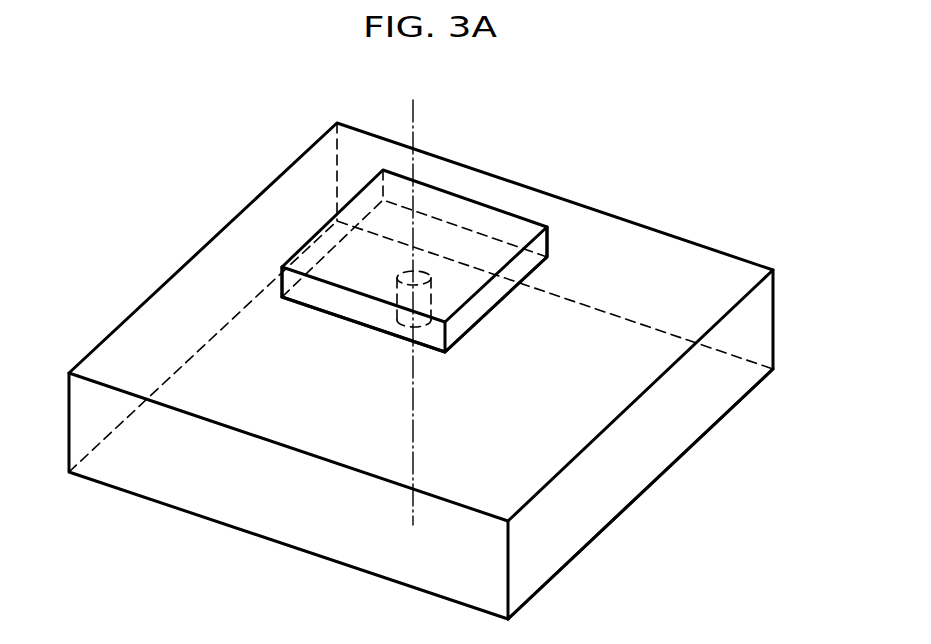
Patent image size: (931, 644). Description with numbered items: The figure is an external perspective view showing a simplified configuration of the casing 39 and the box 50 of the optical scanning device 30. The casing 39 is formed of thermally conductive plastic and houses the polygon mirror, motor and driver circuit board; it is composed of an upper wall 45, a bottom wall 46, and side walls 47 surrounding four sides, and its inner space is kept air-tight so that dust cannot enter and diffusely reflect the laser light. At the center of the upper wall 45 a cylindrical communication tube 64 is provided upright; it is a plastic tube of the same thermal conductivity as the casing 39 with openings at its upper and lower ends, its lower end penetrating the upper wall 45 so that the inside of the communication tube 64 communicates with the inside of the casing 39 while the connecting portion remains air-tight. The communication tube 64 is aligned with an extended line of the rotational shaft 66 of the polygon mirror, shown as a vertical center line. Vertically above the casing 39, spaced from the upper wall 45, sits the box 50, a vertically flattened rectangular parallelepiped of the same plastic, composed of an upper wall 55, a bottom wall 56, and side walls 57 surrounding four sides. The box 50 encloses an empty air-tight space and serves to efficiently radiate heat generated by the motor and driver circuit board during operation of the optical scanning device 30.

The optical scanning device 30 is at (278, 121).
The casing 39 is at (670, 231).
The upper wall 45 is at (707, 287).
The bottom wall 46 is at (585, 548).
The side walls 47 is at (207, 489).
The box 50 is at (477, 203).
The upper wall 55 is at (537, 222).
The bottom wall 56 is at (467, 331).
The side walls 57 is at (324, 297).
The communication tube 64 is at (398, 271).
The rotational shaft 66 is at (413, 128).